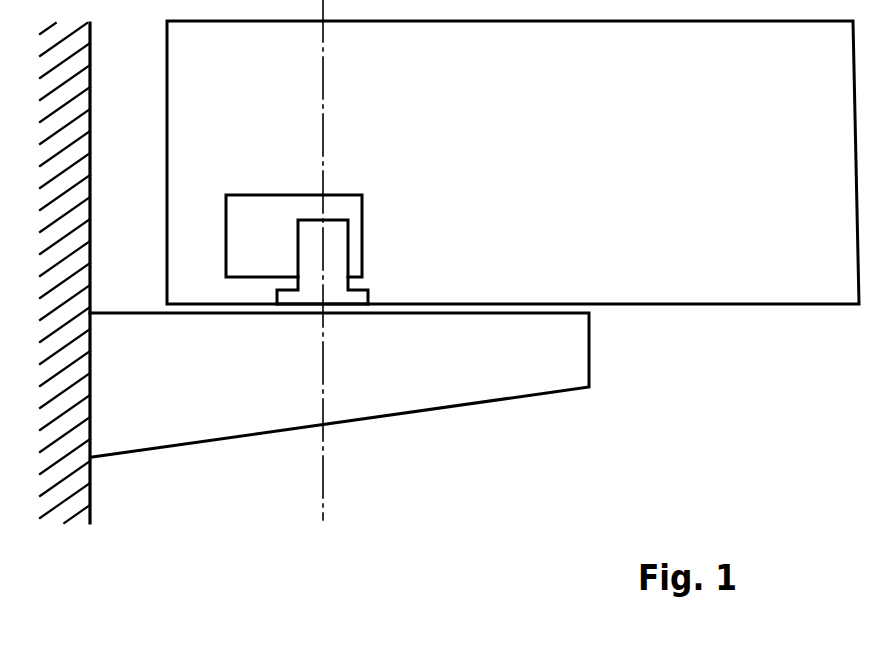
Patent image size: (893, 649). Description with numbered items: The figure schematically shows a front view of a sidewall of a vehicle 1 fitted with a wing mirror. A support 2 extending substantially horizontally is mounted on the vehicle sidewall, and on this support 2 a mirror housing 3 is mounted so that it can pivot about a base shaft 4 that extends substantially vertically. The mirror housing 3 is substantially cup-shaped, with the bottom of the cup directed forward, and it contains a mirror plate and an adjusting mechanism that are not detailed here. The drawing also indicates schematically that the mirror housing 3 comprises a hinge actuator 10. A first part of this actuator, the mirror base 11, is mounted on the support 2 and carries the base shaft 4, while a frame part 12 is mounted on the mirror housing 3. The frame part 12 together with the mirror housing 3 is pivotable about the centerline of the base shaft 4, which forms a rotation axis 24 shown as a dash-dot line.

The vehicle 1 is at (94, 472).
The support 2 is at (589, 352).
The mirror housing 3 is at (777, 304).
The base shaft 4 is at (348, 303).
The hinge actuator 10 is at (500, 168).
The mirror base 11 is at (368, 295).
The frame part 12 is at (362, 217).
The rotation axis 24 is at (322, 90).